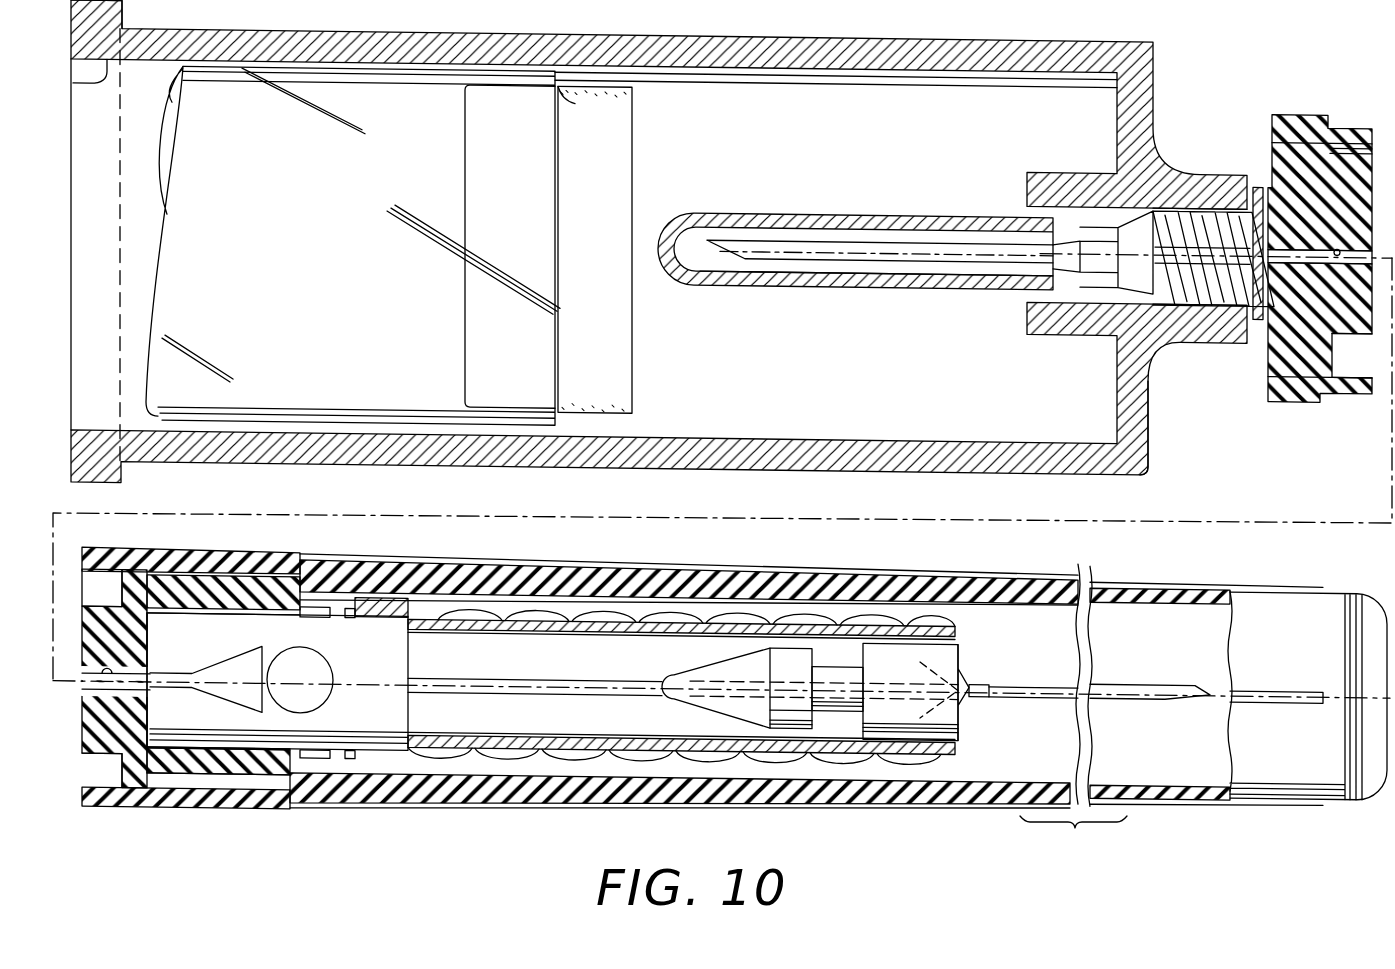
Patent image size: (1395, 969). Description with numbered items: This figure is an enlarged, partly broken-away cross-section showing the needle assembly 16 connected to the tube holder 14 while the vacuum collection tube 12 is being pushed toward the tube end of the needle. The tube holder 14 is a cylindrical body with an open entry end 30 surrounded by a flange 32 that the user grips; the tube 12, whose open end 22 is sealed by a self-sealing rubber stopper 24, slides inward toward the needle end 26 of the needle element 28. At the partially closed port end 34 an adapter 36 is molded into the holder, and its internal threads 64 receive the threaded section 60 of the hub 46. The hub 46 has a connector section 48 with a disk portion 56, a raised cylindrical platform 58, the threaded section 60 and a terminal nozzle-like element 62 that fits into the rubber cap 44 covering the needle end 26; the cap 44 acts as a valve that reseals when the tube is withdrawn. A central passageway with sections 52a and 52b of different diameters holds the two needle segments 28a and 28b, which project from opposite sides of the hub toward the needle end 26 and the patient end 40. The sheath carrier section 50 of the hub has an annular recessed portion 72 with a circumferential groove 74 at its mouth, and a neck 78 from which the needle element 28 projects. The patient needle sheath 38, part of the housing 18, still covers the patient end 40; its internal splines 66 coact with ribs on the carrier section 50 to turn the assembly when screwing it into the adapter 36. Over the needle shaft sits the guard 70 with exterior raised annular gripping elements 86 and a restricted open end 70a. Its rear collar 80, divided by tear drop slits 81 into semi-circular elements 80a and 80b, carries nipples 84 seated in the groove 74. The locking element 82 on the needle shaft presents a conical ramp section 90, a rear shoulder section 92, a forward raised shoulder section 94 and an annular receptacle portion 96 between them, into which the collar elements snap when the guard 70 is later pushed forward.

The vacuum collection tube 12 is at (330, 94).
The tube holder 14 is at (448, 459).
The needle assembly 16 is at (1272, 151).
The housing 18 is at (520, 551).
The open end 22 is at (575, 80).
The rubber stopper 24 is at (626, 114).
The needle end 26 is at (832, 229).
The needle element 28 is at (580, 675).
The needle segment 28a is at (945, 243).
The needle segment 28b is at (1000, 684).
The open entry end 30 is at (95, 67).
The flange 32 is at (124, 10).
The partially closed port end 34 is at (1150, 434).
The adapter 36 is at (1212, 316).
The patient needle sheath 38 is at (943, 568).
The patient end 40 is at (1150, 663).
The rubber cap 44 is at (824, 271).
The hub 46 is at (1344, 330).
The connector section 48 is at (1338, 132).
The sheath carrier section 50 is at (135, 788).
The passageway section 52a is at (1355, 247).
The passageway section 52b is at (1337, 230).
The disk portion 56 is at (1303, 371).
The raised cylindrical platform 58 is at (1258, 305).
The threaded section 60 is at (1168, 200).
The nozzle-like element 62 is at (1103, 214).
The internal threads 64 is at (1188, 284).
The internal splines 66 is at (228, 572).
The guard 70 is at (795, 606).
The open end 70a is at (962, 639).
The annular recessed portion 72 is at (268, 756).
The circumferential groove 74 is at (305, 596).
The neck 78 is at (238, 662).
The collar 80 is at (178, 723).
The semi-circular element 80a is at (170, 618).
The semi-circular element 80b is at (220, 717).
The tear drop slits 81 is at (292, 658).
The locking element 82 is at (712, 689).
The nipples 84 is at (335, 613).
The raised annular gripping elements 86 is at (665, 599).
The ramp section 90 is at (728, 655).
The rear shoulder section 92 is at (790, 710).
The raised shoulder section 94 is at (905, 713).
The annular receptacle portion 96 is at (838, 644).